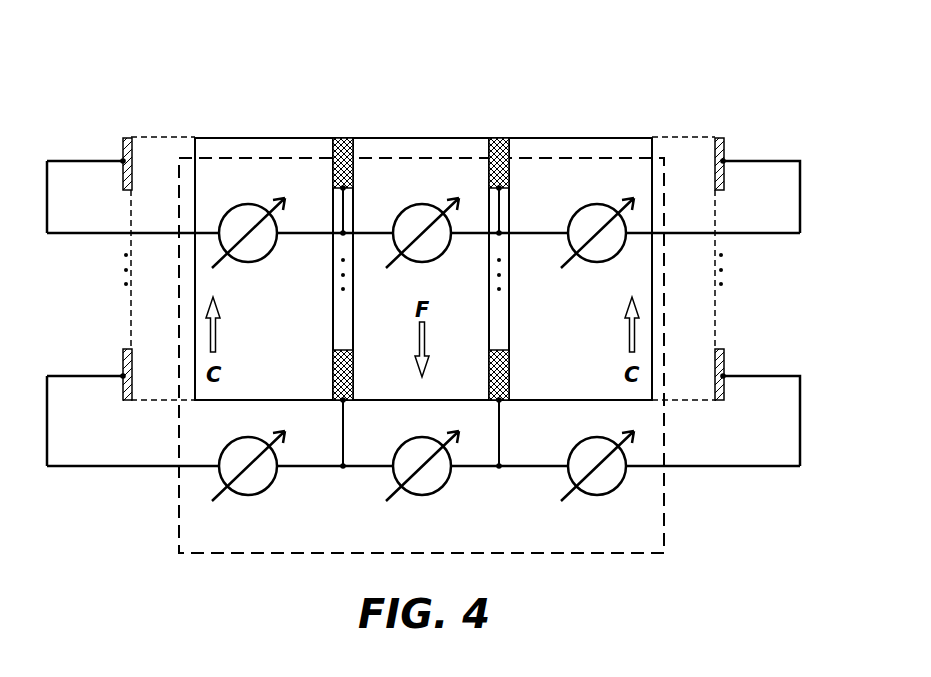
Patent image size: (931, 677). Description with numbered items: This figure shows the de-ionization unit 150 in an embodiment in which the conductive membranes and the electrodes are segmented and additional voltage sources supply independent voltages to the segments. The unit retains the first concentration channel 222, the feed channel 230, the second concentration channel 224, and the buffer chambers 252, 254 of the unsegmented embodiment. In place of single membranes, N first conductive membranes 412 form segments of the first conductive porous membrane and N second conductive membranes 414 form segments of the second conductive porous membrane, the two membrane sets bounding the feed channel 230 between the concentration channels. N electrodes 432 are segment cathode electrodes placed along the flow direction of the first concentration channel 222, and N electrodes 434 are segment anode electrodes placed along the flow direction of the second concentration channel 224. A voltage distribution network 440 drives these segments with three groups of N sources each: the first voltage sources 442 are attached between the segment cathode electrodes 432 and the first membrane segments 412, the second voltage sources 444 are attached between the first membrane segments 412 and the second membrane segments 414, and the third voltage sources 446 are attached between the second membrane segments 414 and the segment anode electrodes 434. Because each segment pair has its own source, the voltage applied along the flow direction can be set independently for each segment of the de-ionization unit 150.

The de-ionization unit 150 is at (710, 28).
The first concentration channel 222 is at (285, 137).
The feed channel 230 is at (438, 137).
The second concentration channel 224 is at (607, 137).
The buffer chamber 252 is at (178, 136).
The buffer chamber 254 is at (672, 137).
The first conductive membranes 412 is at (311, 281).
The second conductive membranes 414 is at (509, 281).
The electrodes 432 is at (102, 290).
The electrodes 434 is at (763, 289).
The voltage distribution network 440 is at (177, 480).
The voltage sources 442 is at (271, 352).
The voltage sources 444 is at (431, 349).
The voltage sources 446 is at (576, 353).